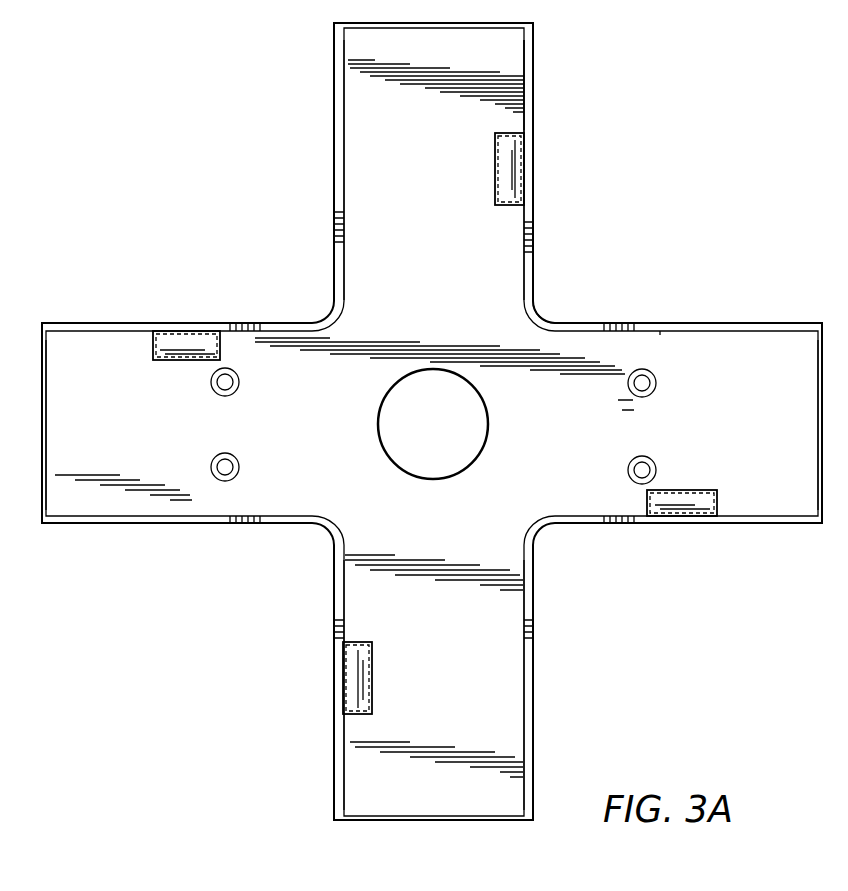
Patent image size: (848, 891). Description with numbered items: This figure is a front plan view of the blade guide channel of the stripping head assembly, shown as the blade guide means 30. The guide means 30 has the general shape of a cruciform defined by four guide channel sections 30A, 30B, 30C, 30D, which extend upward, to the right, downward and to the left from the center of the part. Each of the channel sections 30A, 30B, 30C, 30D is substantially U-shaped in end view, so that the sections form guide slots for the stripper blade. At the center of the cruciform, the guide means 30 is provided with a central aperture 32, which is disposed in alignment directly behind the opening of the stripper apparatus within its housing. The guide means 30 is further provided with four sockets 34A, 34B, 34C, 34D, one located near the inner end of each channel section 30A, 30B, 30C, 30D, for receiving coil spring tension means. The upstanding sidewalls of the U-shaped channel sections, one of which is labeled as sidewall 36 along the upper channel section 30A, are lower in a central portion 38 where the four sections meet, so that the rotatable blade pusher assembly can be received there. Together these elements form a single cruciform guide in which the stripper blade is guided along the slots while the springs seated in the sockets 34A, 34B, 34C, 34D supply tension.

The blade guide means 30 is at (326, 178).
The guide channel section 30A is at (398, 161).
The guide channel section 30B is at (722, 392).
The guide channel section 30C is at (416, 699).
The guide channel section 30D is at (85, 458).
The central aperture 32 is at (421, 434).
The socket 34A is at (510, 175).
The socket 34B is at (678, 504).
The socket 34C is at (356, 683).
The socket 34D is at (183, 361).
The side wall 36 is at (535, 115).
The central portion 38 is at (558, 302).